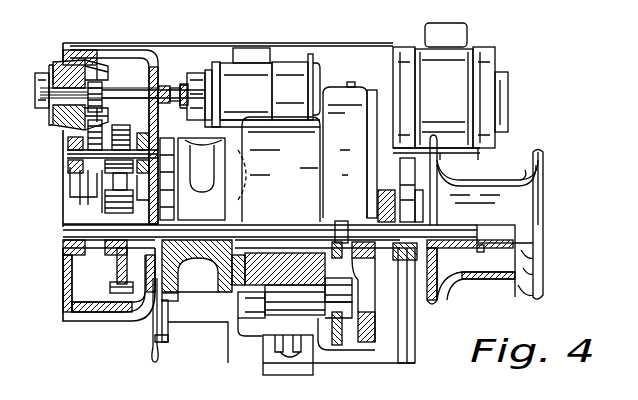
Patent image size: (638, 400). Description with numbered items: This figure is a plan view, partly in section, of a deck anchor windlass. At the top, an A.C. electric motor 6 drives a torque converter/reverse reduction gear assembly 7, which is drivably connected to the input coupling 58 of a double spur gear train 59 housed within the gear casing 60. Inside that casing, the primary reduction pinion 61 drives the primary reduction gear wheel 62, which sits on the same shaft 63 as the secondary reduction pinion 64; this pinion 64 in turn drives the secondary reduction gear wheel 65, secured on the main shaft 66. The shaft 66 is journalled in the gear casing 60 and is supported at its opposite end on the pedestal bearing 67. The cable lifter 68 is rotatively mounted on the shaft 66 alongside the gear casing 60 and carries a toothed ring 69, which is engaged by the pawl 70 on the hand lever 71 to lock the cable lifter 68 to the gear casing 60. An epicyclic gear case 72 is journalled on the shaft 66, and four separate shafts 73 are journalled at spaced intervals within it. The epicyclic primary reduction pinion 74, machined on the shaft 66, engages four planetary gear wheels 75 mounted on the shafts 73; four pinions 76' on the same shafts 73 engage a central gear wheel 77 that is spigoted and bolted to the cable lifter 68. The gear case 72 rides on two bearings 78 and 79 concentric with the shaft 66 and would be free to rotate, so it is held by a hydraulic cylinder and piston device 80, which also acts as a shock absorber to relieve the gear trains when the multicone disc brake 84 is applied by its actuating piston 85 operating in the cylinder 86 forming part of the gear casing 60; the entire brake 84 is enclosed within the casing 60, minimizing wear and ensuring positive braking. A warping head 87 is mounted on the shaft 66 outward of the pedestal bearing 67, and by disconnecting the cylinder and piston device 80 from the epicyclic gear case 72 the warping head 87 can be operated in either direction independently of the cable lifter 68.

The A.C. electric motor 6 is at (486, 76).
The torque converter/reverse reduction gear assembly 7 is at (283, 62).
The input coupling 58 is at (166, 88).
The double spur gear train 59 is at (136, 72).
The gear casing 60 is at (105, 305).
The primary reduction pinion 61 is at (103, 84).
The primary reduction gear wheel 62 is at (80, 182).
The shaft 63 is at (70, 150).
The secondary reduction pinion 64 is at (121, 136).
The secondary reduction gear wheel 65 is at (117, 267).
The shaft 66 is at (305, 232).
The pedestal bearing 67 is at (413, 262).
The cable lifter 68 is at (187, 268).
The toothed ring 69 is at (180, 296).
The pawl 70 is at (170, 318).
The hand lever 71 is at (158, 347).
The epicyclic gear case 72 is at (340, 94).
The shafts 73 is at (417, 324).
The primary reduction pinion of the epicyclic gear train 74 is at (343, 226).
The planetary gear wheel 75 is at (342, 332).
The pinion 76' is at (273, 337).
The central gear wheel 77 is at (282, 262).
The bearing 78 is at (374, 266).
The bearing 79 is at (242, 275).
The hydraulic cylinder and piston device 80 is at (300, 363).
The multicone disc brake 84 is at (90, 70).
The actuating piston 85 is at (54, 70).
The cylinder 86 is at (50, 118).
The warping head 87 is at (505, 282).